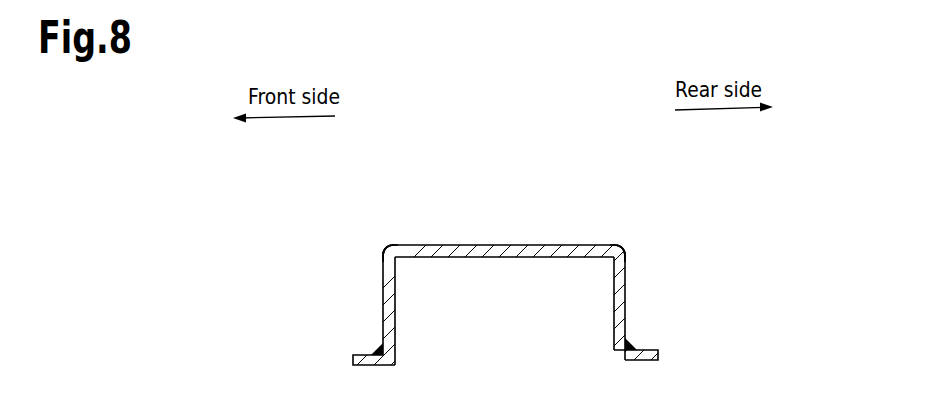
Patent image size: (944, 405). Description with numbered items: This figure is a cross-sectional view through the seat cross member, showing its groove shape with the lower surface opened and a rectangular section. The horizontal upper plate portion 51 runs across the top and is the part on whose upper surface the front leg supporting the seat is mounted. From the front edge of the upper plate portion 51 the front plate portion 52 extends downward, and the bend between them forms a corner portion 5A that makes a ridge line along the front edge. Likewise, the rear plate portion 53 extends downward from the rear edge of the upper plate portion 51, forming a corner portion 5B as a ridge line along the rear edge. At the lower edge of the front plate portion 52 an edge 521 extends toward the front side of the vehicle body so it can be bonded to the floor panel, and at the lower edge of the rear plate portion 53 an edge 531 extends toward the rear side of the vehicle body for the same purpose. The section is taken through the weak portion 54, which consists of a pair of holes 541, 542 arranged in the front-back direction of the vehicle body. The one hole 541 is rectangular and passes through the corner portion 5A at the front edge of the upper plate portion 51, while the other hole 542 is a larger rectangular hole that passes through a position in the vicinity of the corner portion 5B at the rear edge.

The upper plate portion 51 is at (504, 245).
The front plate portion 52 is at (383, 310).
The rear plate portion 53 is at (625, 292).
The edge 521 is at (365, 355).
The edge 531 is at (646, 349).
The hole 541 is at (394, 249).
The hole 542 is at (598, 249).
The weak portion 54 is at (511, 217).
The corner portion 5A is at (383, 252).
The corner portion 5B is at (623, 247).